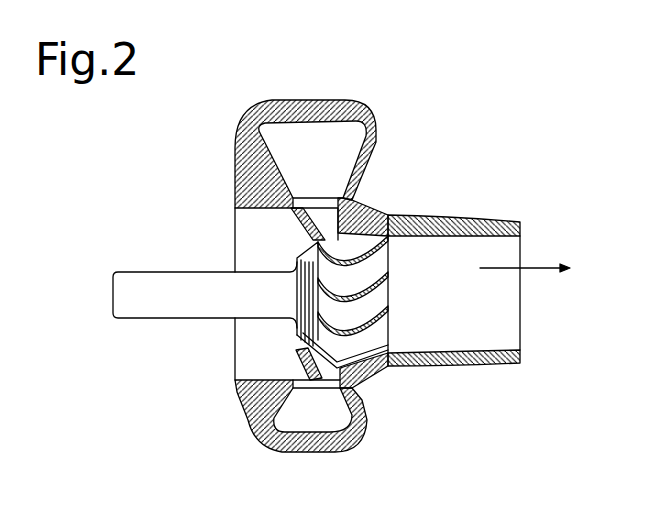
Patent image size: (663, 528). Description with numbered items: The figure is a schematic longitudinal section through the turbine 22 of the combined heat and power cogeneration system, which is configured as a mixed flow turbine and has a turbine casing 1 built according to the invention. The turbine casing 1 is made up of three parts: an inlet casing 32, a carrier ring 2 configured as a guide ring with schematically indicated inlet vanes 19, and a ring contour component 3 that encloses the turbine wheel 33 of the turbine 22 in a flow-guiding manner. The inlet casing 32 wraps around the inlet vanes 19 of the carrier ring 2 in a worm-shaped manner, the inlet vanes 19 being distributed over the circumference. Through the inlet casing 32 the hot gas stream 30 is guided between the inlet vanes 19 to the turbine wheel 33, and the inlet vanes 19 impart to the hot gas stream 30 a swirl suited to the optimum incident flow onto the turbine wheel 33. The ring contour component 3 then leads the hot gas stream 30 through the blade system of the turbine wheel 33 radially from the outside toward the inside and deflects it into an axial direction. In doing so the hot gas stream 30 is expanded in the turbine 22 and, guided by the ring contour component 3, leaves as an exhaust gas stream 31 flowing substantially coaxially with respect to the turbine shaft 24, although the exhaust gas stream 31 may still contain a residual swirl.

The turbine casing 1 is at (389, 380).
The carrier ring 2 is at (329, 401).
The ring contour component 3 is at (475, 365).
The inlet vanes 19 is at (300, 390).
The turbine 22 is at (398, 197).
The turbine shaft 24 is at (180, 283).
The hot gas stream 30 is at (320, 210).
The exhaust gas stream 31 is at (525, 235).
The inlet casing 32 is at (345, 100).
The turbine wheel 33 is at (392, 316).